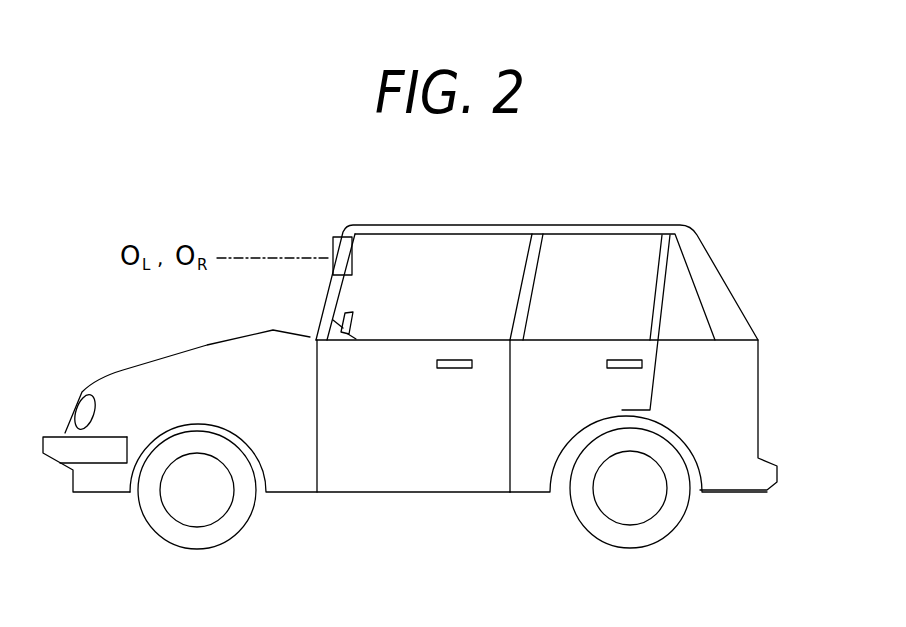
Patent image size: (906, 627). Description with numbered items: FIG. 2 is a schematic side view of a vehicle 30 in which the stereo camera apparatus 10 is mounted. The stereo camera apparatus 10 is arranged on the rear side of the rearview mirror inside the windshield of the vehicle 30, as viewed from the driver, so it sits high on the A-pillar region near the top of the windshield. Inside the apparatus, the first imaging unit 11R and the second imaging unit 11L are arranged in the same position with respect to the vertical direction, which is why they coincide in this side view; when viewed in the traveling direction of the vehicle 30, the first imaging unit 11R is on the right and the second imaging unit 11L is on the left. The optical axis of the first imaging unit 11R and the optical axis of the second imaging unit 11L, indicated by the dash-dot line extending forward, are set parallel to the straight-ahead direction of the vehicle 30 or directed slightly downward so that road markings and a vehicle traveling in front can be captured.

The stereo camera apparatus 10 is at (330, 268).
The first imaging unit 11R is at (332, 238).
The second imaging unit 11L is at (332, 238).
The vehicle 30 is at (610, 223).